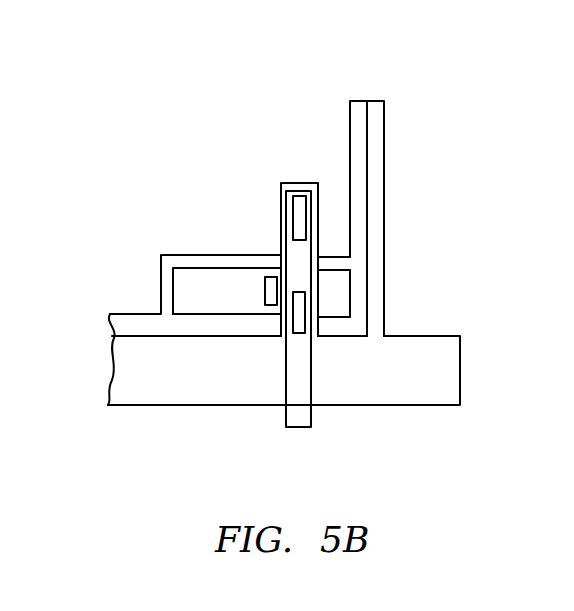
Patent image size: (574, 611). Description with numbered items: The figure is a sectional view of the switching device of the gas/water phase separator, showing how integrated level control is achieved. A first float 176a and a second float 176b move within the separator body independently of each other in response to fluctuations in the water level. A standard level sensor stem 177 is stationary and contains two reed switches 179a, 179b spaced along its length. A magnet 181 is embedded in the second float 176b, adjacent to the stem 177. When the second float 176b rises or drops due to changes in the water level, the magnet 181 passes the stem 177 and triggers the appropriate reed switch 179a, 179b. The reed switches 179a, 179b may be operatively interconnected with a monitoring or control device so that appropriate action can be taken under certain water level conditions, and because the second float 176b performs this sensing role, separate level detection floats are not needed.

The first float 176a is at (358, 100).
The second float 176b is at (180, 297).
The level sensor stem 177 is at (293, 427).
The reed switch 179a is at (302, 218).
The reed switch 179b is at (300, 308).
The magnet 181 is at (273, 281).